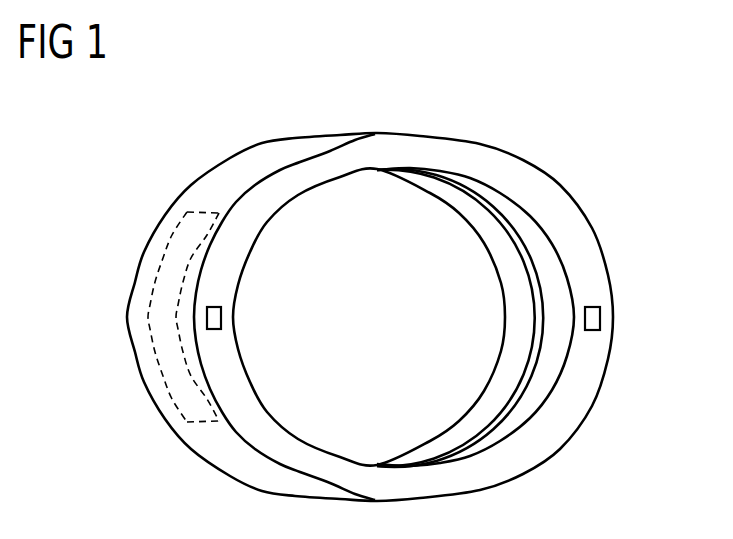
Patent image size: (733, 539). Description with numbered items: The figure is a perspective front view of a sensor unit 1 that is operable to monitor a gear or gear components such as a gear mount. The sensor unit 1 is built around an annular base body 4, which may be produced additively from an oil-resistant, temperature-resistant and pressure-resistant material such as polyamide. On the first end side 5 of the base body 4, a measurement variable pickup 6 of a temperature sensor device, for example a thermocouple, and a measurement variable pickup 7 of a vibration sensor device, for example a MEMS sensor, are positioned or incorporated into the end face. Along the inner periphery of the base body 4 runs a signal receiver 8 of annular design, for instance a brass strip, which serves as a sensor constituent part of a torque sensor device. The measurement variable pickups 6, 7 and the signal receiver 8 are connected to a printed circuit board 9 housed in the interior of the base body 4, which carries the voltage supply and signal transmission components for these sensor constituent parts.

The sensor unit 1 is at (550, 120).
The annular base body 4 is at (573, 430).
The first end side 5 is at (552, 211).
The measurement variable pickup of the temperature sensor device 6 is at (601, 318).
The measurement variable pickup of the vibration sensor device 7 is at (206, 321).
The signal receiver 8 is at (534, 279).
The printed circuit board 9 is at (160, 271).